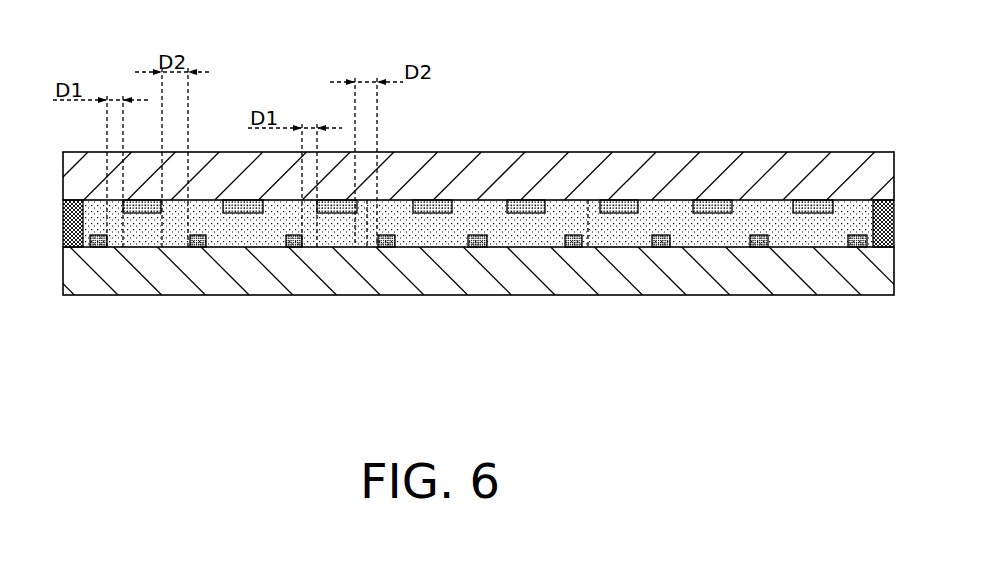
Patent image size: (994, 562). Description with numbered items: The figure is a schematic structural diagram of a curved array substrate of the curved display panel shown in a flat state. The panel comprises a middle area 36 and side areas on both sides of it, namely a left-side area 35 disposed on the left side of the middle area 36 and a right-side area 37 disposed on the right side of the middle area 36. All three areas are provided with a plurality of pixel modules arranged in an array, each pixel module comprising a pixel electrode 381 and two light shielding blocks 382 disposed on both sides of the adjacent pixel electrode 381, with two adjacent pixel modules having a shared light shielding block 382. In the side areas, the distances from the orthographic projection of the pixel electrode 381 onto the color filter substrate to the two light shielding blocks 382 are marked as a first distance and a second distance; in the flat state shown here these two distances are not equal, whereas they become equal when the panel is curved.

The left-side area 35 is at (279, 315).
The middle area 36 is at (483, 325).
The right-side area 37 is at (802, 323).
The pixel electrode 381 is at (140, 214).
The light shielding block 382 is at (95, 247).